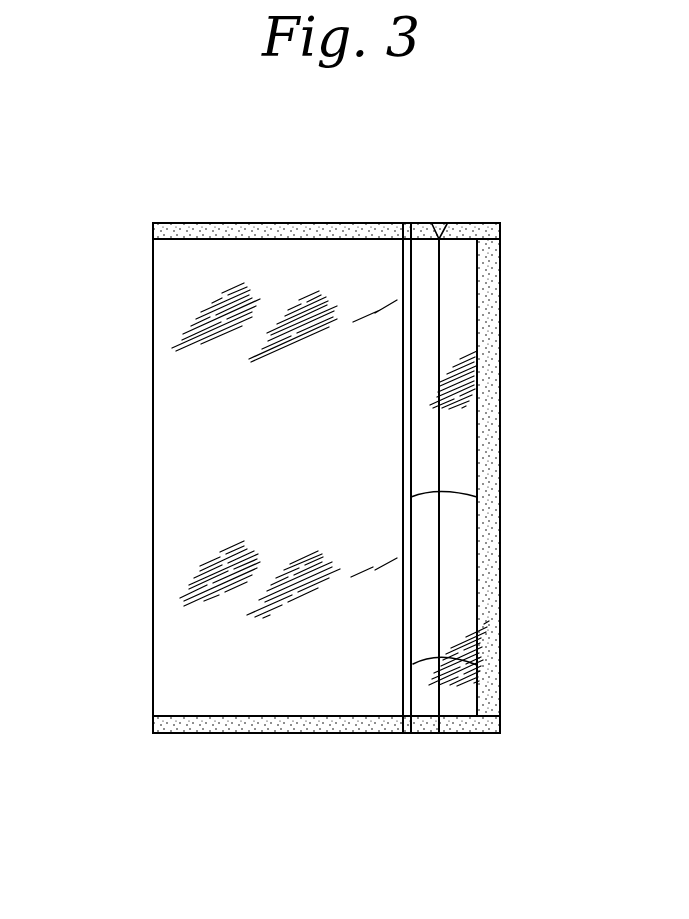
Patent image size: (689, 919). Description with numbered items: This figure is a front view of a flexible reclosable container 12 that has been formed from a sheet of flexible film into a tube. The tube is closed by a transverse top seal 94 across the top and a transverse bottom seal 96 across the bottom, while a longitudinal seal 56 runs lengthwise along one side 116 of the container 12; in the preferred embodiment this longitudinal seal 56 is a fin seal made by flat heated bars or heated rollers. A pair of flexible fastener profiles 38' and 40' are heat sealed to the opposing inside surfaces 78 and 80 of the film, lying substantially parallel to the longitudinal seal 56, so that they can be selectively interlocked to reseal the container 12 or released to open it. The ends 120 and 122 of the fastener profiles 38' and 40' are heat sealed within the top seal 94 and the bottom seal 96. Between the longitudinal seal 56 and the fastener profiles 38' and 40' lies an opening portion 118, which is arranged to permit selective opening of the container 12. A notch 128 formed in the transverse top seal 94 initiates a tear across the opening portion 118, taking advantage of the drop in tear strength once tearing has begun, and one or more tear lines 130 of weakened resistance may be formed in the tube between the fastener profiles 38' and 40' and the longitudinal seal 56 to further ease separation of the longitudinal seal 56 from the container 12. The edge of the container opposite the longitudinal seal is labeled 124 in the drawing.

The flexible reclosable container 12 is at (217, 764).
The transverse top seal 94 is at (195, 223).
The transverse bottom seal 96 is at (347, 735).
The end of fastener profile 120 is at (420, 735).
The left side edge 124 is at (153, 542).
The inside surface 78 is at (193, 410).
The inside surface 80 is at (178, 303).
The end of fastener profile 122 is at (403, 223).
The fastener profile 40' is at (354, 439).
The notch 128 is at (438, 223).
The side of container 116 is at (500, 313).
The longitudinal seal 56 is at (500, 575).
The opening portion 118 is at (462, 430).
The tear line 130 is at (439, 360).
The fastener profile 38' is at (493, 579).